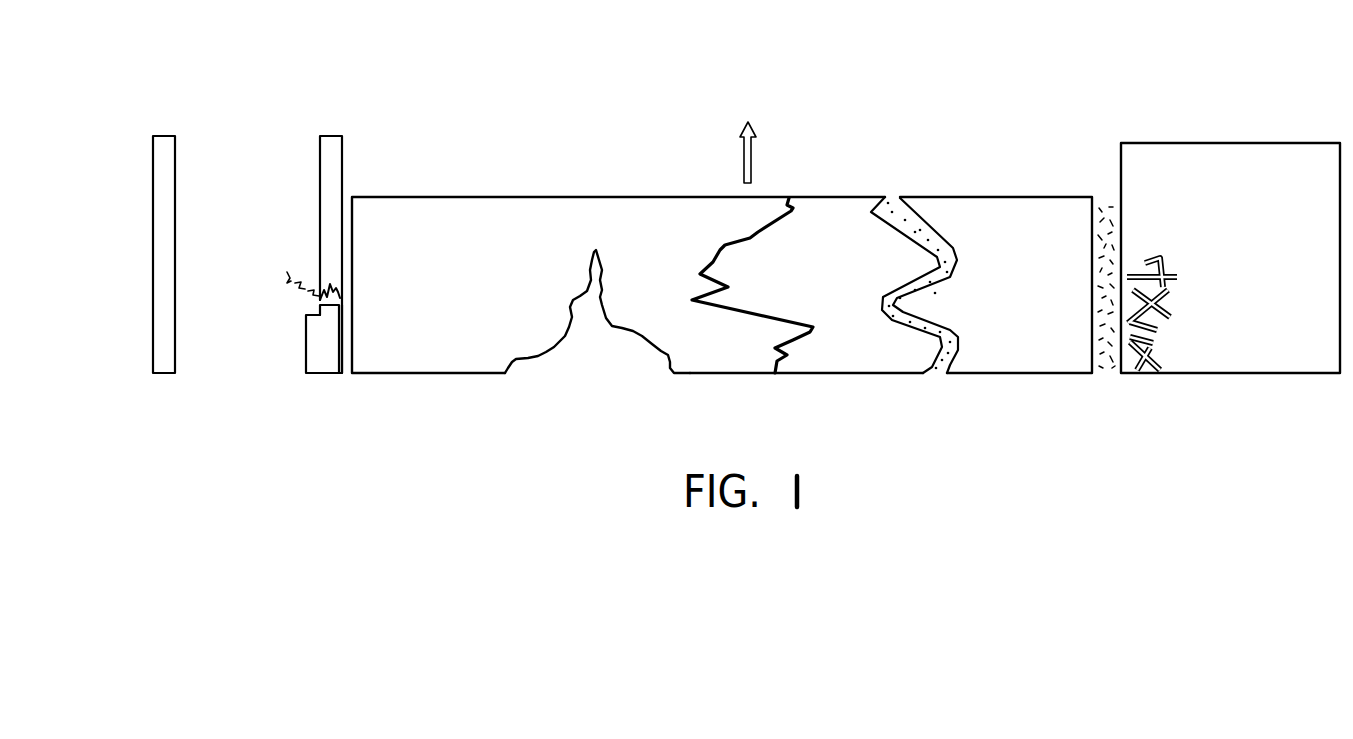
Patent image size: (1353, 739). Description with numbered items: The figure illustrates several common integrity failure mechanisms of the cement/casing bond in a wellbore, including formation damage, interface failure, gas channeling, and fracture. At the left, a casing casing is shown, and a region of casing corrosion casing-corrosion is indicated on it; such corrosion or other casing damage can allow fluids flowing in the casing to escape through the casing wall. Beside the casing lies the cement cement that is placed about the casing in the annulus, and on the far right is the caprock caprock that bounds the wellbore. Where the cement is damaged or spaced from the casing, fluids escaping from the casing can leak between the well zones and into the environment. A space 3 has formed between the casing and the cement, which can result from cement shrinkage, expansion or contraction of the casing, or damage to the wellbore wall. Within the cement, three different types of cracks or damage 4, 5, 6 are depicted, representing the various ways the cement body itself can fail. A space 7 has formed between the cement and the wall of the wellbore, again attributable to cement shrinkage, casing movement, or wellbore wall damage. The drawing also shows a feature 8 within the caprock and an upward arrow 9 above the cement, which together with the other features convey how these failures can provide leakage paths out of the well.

The space between casing and cement 3 is at (344, 374).
The crack/damage to the cement 4 is at (589, 326).
The crack/damage to the cement 5 is at (795, 343).
The crack/damage to the cement 6 is at (942, 362).
The space between cement and wellbore wall 7 is at (1107, 358).
The fractures in caprock 8 is at (1170, 322).
The gas migration direction 9 is at (752, 160).
The element casing is at (167, 142).
The casing corrosion casing-corrosion is at (323, 300).
The element cement is at (458, 217).
The element caprock is at (1221, 173).